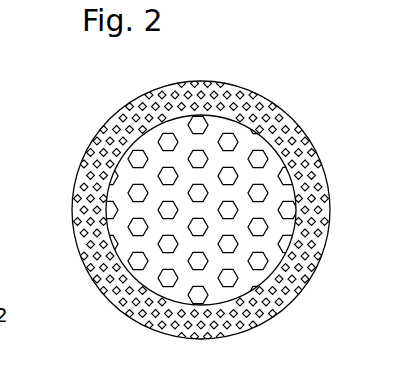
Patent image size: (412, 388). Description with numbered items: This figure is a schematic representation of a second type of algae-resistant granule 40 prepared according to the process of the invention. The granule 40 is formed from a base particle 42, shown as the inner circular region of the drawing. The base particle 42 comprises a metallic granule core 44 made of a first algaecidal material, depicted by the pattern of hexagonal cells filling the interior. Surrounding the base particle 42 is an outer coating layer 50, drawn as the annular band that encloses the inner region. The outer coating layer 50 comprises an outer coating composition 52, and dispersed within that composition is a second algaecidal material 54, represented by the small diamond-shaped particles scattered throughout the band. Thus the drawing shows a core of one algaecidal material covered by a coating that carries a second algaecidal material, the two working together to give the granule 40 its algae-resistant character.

The algae-resistant granule 40 is at (99, 82).
The base particle 42 is at (150, 177).
The metallic granule core 44 is at (170, 226).
The outer coating layer 50 is at (137, 305).
The outer coating composition 52 is at (290, 292).
The second algaecidal material 54 is at (237, 92).